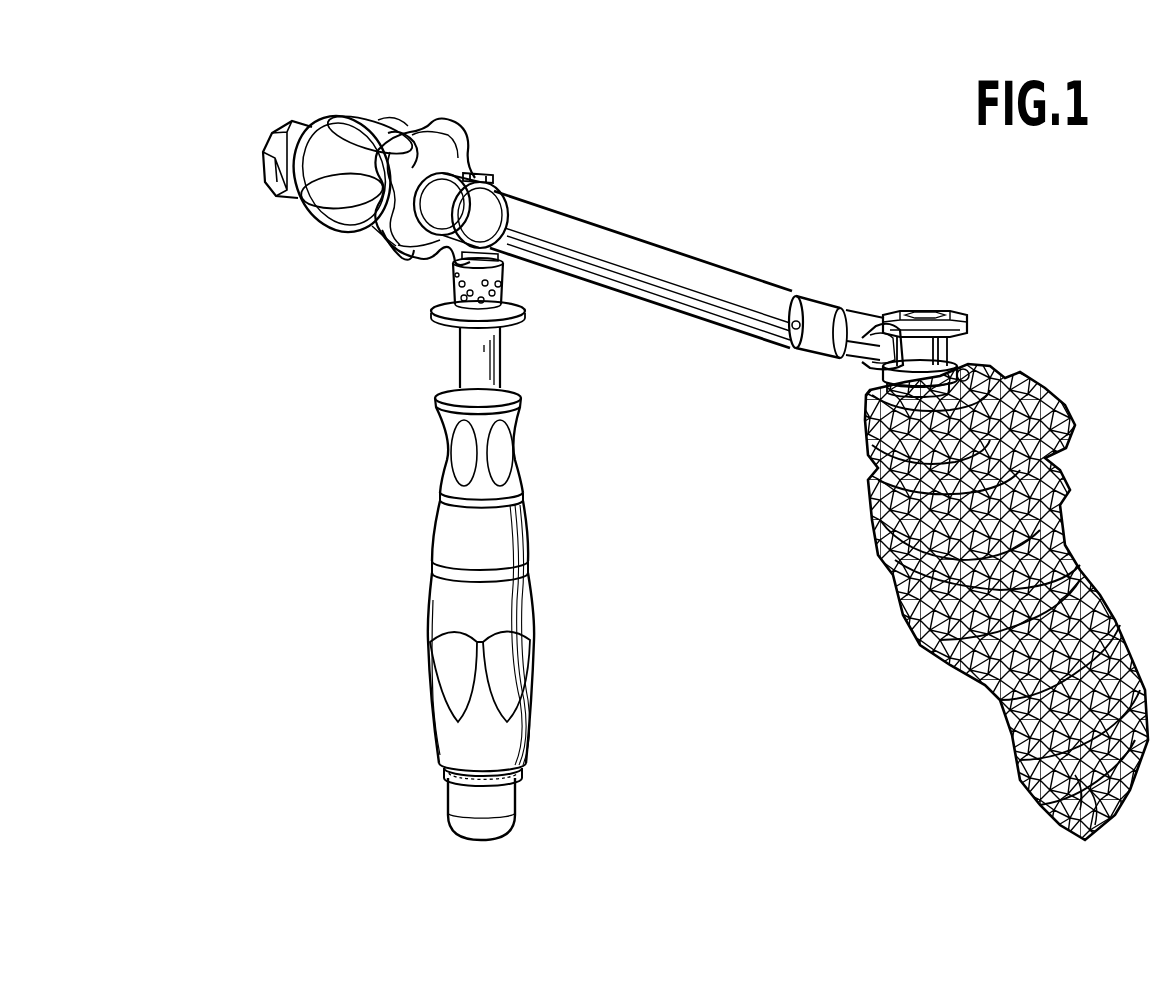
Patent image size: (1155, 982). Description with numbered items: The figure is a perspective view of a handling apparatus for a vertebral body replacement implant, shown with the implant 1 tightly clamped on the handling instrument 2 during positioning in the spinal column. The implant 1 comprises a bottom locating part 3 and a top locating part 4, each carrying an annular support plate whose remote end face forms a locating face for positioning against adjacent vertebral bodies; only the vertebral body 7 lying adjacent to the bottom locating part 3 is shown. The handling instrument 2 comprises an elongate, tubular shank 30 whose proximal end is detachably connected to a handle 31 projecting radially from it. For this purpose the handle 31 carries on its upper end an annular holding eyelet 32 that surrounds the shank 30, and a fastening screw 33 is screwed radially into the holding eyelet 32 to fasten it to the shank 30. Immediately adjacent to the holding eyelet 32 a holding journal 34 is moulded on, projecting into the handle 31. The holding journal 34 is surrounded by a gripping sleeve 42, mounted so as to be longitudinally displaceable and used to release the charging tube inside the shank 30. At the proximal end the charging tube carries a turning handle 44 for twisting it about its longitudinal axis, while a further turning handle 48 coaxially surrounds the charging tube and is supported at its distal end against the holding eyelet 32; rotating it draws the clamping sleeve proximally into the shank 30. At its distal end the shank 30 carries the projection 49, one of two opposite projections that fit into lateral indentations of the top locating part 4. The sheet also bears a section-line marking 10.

The implant 1 is at (937, 299).
The handling instrument 2 is at (498, 137).
The bottom locating part 3 is at (952, 364).
The top locating part 4 is at (945, 318).
The vertebral body 7 is at (868, 434).
The section line 10 is at (480, 112).
The shank 30 is at (690, 270).
The handle 31 is at (450, 524).
The holding eyelet 32 is at (440, 237).
The fastening screw 33 is at (487, 177).
The holding journal 34 is at (490, 255).
The gripping sleeve 42 is at (455, 284).
The turning handle 44 is at (276, 192).
The turning handle 48 is at (365, 142).
The projection 49 is at (888, 346).